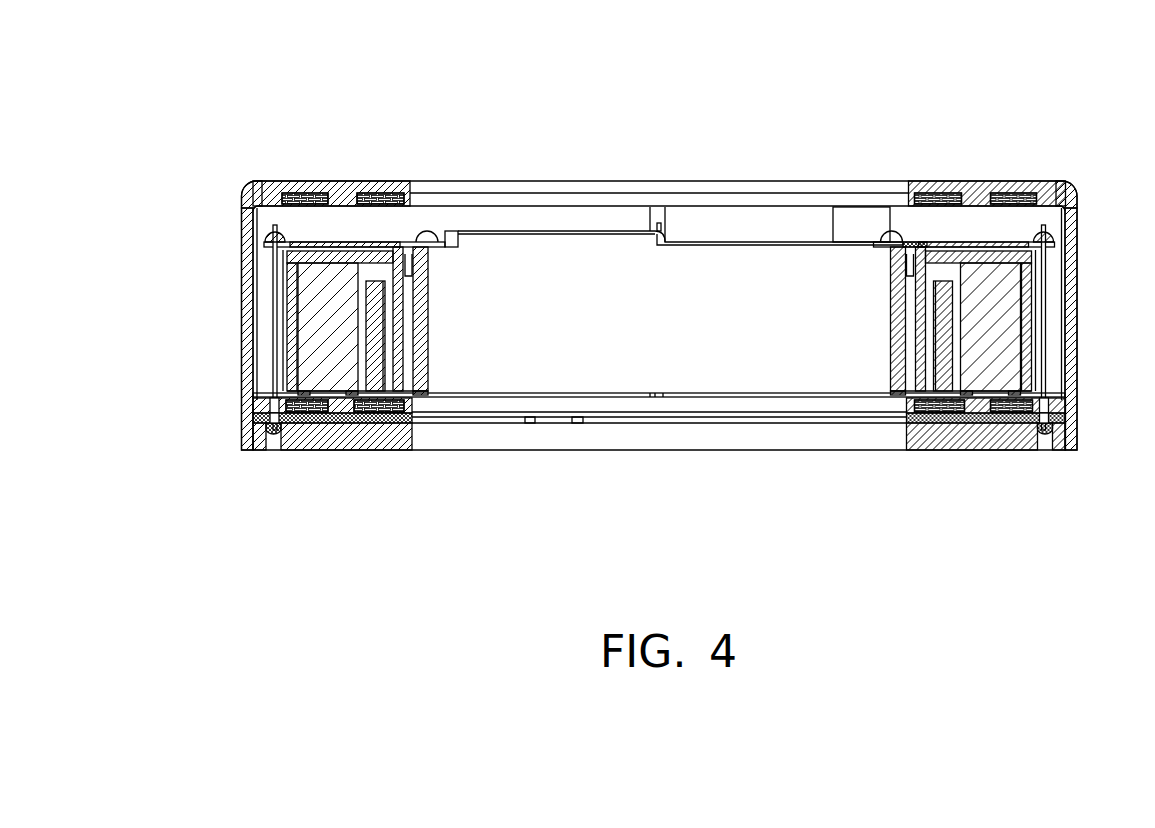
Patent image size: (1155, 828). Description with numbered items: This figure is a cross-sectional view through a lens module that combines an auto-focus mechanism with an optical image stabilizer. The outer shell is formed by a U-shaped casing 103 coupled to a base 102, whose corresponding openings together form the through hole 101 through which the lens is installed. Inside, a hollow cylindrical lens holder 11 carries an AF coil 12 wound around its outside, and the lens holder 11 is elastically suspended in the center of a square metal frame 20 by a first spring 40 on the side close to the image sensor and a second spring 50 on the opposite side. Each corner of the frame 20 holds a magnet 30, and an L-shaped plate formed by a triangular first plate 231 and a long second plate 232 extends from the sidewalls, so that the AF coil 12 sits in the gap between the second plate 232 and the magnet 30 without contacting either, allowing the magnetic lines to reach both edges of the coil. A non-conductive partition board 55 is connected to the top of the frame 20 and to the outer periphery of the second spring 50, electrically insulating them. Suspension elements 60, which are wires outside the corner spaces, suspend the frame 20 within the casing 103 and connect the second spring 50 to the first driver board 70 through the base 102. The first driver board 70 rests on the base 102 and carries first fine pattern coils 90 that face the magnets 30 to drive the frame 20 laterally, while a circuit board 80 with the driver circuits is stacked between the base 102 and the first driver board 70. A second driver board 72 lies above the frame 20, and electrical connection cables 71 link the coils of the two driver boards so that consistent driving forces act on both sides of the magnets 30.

The through hole 101 is at (661, 140).
The casing 103 is at (250, 240).
The second driver board 72 is at (310, 194).
The suspension elements 60 is at (282, 272).
The frame 20 is at (295, 304).
The first plate 231 is at (316, 256).
The second plate 232 is at (407, 298).
The magnets 30 is at (322, 342).
The lens holder 11 is at (422, 330).
The AF coil 12 is at (382, 360).
The partition board 55 is at (344, 246).
The second spring 50 is at (752, 243).
The electrical connection cables 71 is at (865, 230).
The first driver board 70 is at (270, 405).
The circuit board 80 is at (391, 424).
The first fine pattern coils 90 is at (319, 418).
The base 102 is at (306, 434).
The first spring 40 is at (690, 398).